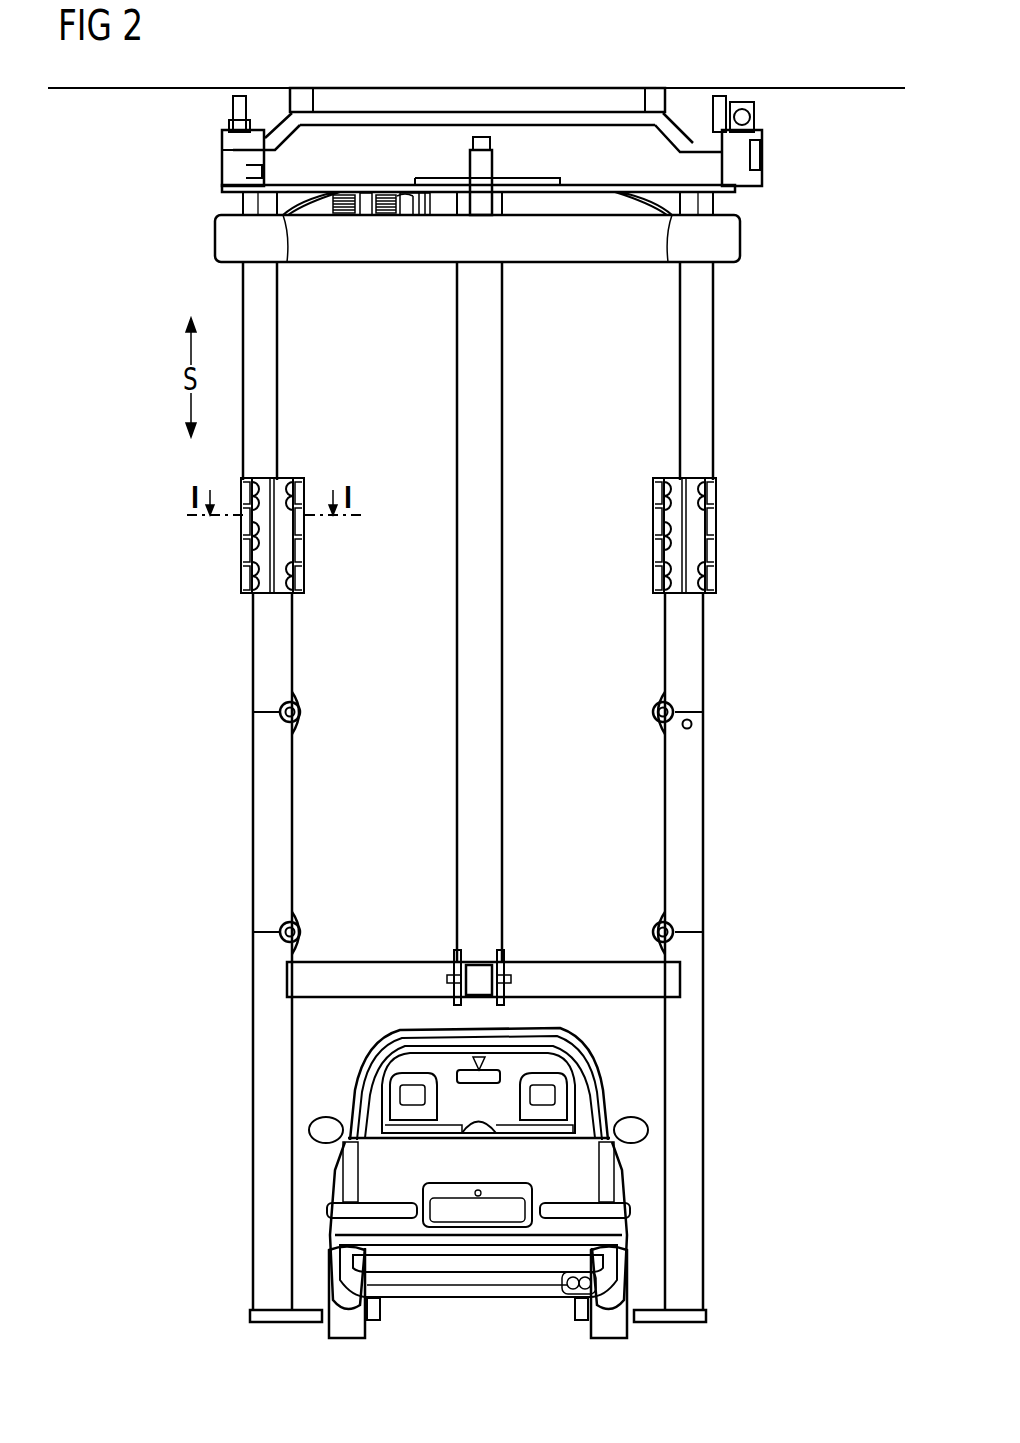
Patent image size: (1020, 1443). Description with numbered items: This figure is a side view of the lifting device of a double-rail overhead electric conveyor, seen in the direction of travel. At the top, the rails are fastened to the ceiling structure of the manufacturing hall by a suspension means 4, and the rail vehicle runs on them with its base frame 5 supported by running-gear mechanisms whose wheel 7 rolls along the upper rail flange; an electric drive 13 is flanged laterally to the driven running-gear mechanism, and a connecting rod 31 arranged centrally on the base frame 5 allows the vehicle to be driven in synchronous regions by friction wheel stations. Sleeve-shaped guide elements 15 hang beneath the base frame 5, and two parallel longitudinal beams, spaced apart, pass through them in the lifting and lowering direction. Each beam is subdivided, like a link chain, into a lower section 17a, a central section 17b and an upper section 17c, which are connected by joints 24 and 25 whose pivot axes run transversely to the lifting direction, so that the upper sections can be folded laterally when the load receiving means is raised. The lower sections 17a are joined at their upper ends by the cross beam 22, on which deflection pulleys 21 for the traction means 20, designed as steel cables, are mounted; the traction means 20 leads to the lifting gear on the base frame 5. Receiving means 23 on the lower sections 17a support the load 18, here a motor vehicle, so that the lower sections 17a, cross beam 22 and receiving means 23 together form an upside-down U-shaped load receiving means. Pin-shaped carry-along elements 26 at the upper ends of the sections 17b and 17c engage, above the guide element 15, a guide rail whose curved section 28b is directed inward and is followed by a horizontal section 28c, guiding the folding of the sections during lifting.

The suspension means 4 is at (486, 118).
The base frame 5 is at (738, 238).
The wheel 7 is at (230, 108).
The electric drive 13 is at (752, 116).
The guide element 15 is at (662, 540).
The lower section of longitudinal beam 17a is at (255, 1092).
The central section of longitudinal beam 17b is at (255, 810).
The upper section of longitudinal beam 17c is at (255, 646).
The load 18 is at (480, 1262).
The traction means 20 is at (507, 452).
The deflection pulley 21 is at (452, 966).
The cross beam 22 is at (553, 968).
The receiving means 23 is at (706, 1314).
The joint 24 is at (300, 932).
The joint 25 is at (300, 714).
The carry-along element 26 is at (692, 724).
The curved section of guide rail 28b is at (283, 240).
The horizontal section of guide rail 28c is at (290, 200).
The connecting rod 31 is at (492, 147).